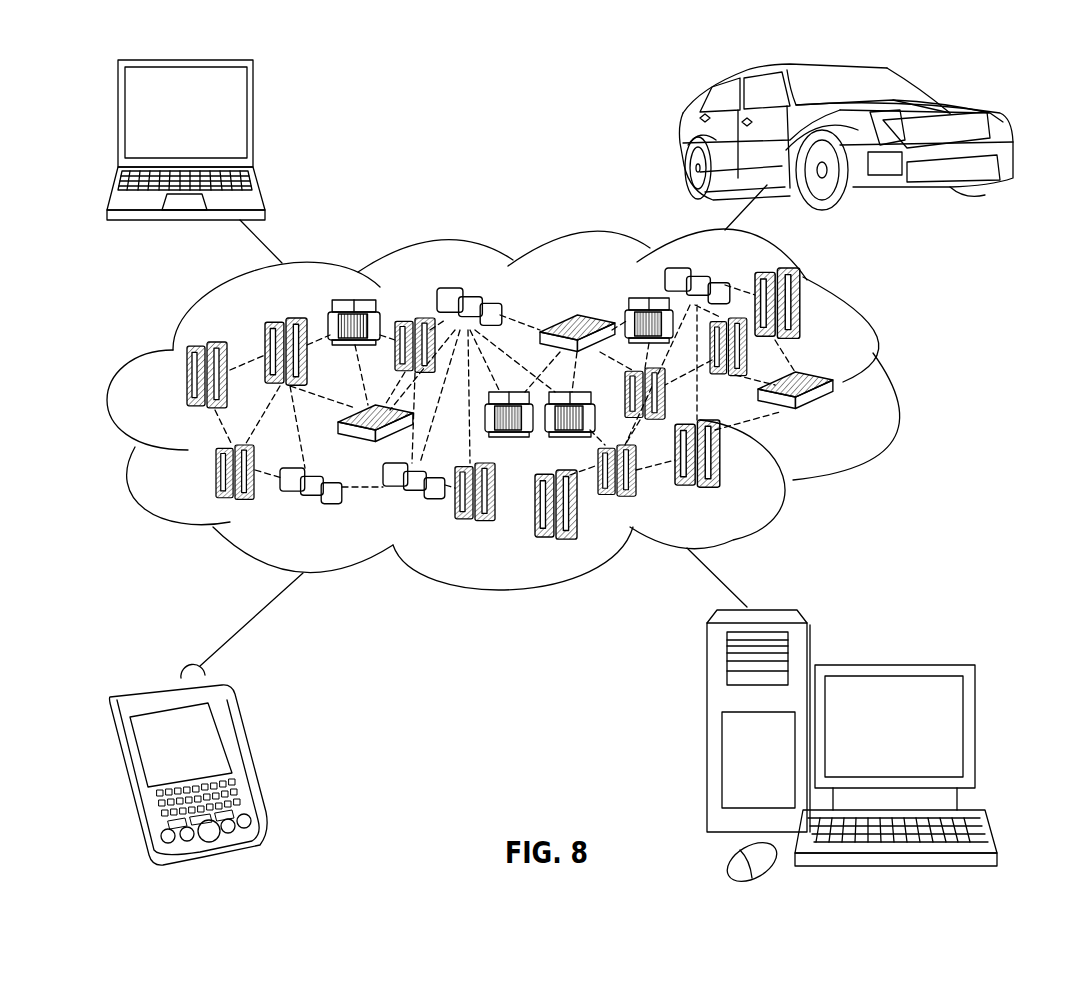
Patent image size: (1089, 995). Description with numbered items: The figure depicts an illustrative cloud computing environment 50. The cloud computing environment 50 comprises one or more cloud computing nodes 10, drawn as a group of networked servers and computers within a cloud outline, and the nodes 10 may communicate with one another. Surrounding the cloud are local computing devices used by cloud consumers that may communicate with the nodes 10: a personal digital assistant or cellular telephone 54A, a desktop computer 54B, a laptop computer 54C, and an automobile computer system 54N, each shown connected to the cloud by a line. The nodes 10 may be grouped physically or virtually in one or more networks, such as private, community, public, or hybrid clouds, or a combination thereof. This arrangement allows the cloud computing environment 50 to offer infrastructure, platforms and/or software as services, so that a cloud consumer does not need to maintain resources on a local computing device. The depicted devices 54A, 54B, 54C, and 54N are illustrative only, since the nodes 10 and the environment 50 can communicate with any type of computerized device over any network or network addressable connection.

The laptop computer 54C is at (255, 118).
The automobile computer system 54N is at (680, 138).
The personal digital assistant (PDA) or cellular telephone 54A is at (256, 755).
The desktop computer 54B is at (890, 665).
The cloud computing environment 50 is at (893, 386).
The cloud computing nodes 10 is at (845, 418).